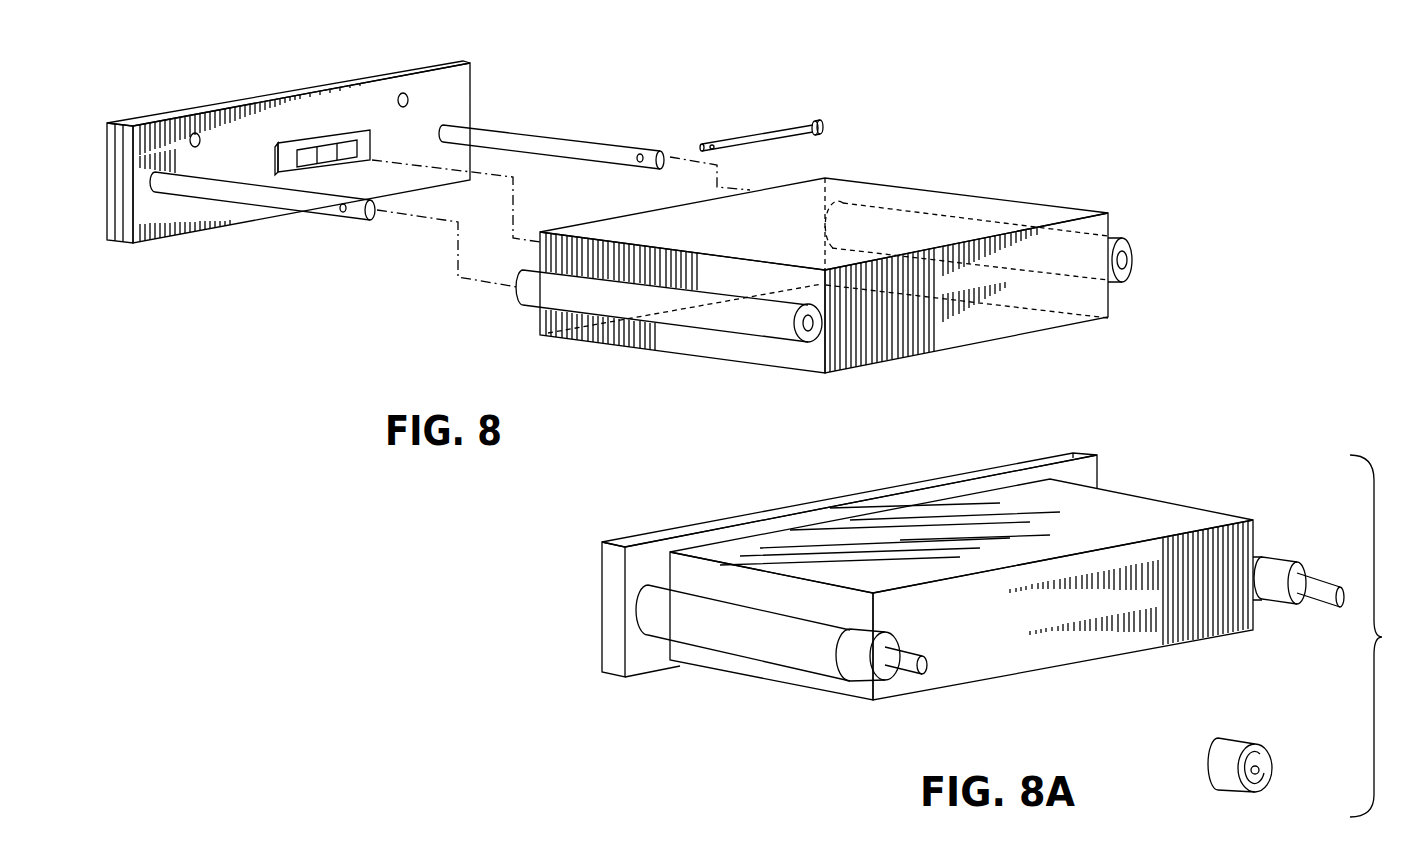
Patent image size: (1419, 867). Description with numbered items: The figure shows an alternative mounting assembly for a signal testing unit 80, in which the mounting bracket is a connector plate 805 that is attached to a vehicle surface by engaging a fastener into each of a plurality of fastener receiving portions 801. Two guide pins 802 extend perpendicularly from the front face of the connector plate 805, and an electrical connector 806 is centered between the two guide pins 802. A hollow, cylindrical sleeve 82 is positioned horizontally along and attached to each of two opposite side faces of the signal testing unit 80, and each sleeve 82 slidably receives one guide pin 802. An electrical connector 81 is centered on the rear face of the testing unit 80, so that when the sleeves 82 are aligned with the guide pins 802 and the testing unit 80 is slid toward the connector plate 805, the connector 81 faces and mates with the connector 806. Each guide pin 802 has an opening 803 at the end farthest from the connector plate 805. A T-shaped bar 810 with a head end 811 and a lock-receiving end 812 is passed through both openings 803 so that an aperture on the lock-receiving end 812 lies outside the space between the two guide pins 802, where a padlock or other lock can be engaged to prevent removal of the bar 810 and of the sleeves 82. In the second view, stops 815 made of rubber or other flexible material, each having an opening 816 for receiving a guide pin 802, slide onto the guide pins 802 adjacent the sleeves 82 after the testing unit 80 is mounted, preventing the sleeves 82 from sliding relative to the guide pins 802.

In FIG. 8, the signal testing unit 80 is at (955, 324).
In FIG. 8A, the signal testing unit 80 is at (1090, 535).
In FIG. 8, the electrical connector 81 is at (733, 248).
In FIG. 8, the hollow cylindrical sleeve 82 is at (752, 323).
In FIG. 8A, the hollow cylindrical sleeve 82 is at (713, 637).
In FIG. 8, the fastener receiving portion 801 is at (407, 97).
In FIG. 8, the guide pin 802 is at (252, 196).
In FIG. 8A, the guide pin 802 is at (908, 657).
In FIG. 8, the opening 803 is at (345, 216).
In FIG. 8, the connector plate 805 is at (280, 93).
In FIG. 8A, the connector plate 805 is at (1078, 468).
In FIG. 8, the electrical connector 806 is at (317, 168).
In FIG. 8, the T-shaped bar 810 is at (760, 126).
In FIG. 8, the head end 811 is at (826, 135).
In FIG. 8, the lock-receiving end 812 is at (724, 152).
In FIG. 8A, the stop 815 is at (857, 664).
In FIG. 8A, the opening 816 is at (1265, 771).